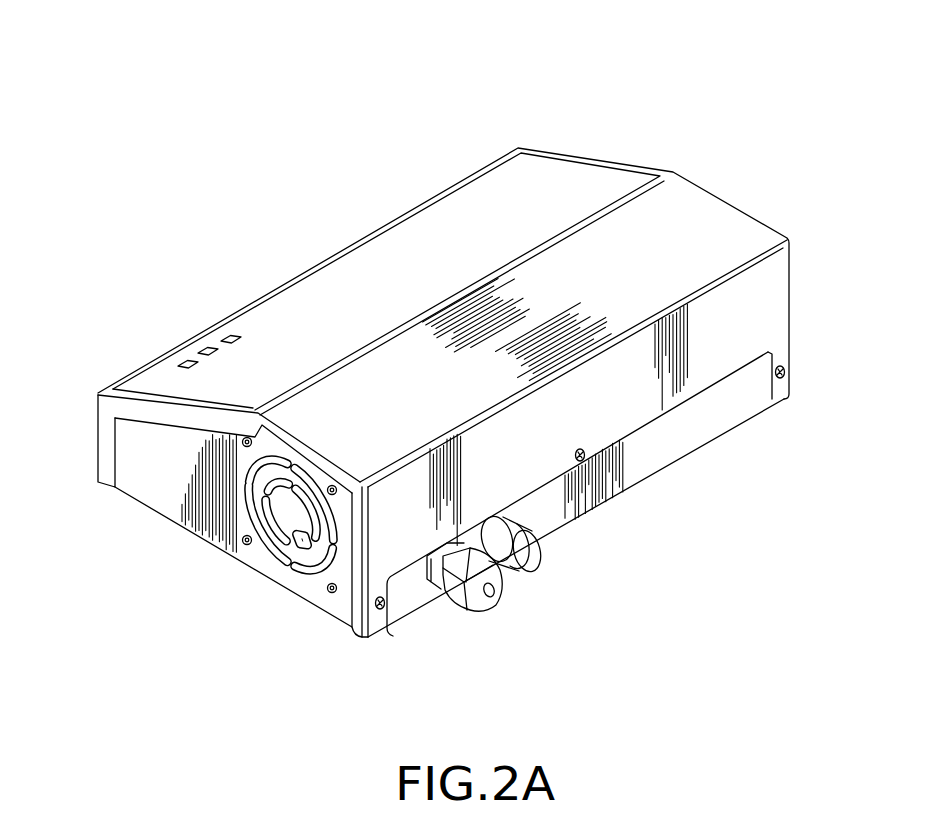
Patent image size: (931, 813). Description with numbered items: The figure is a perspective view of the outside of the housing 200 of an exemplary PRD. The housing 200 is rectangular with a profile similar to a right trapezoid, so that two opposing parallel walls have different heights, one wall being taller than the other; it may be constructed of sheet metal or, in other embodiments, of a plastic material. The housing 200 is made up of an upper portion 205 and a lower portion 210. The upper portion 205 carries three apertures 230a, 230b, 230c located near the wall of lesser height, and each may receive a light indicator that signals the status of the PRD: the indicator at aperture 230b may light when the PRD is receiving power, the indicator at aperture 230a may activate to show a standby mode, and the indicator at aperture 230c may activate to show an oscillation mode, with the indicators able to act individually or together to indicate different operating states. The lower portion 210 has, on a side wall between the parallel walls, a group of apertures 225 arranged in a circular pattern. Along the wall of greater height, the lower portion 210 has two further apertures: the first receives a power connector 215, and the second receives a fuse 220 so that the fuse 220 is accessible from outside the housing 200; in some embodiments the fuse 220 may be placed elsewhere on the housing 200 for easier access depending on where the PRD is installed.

The PRD housing 200 is at (701, 104).
The upper portion 205 is at (728, 225).
The lower portion 210 is at (176, 505).
The power connector 215 is at (498, 582).
The fuse 220 is at (537, 553).
The group of apertures 225 is at (277, 552).
The aperture 230a is at (229, 334).
The aperture 230b is at (205, 347).
The aperture 230c is at (184, 362).